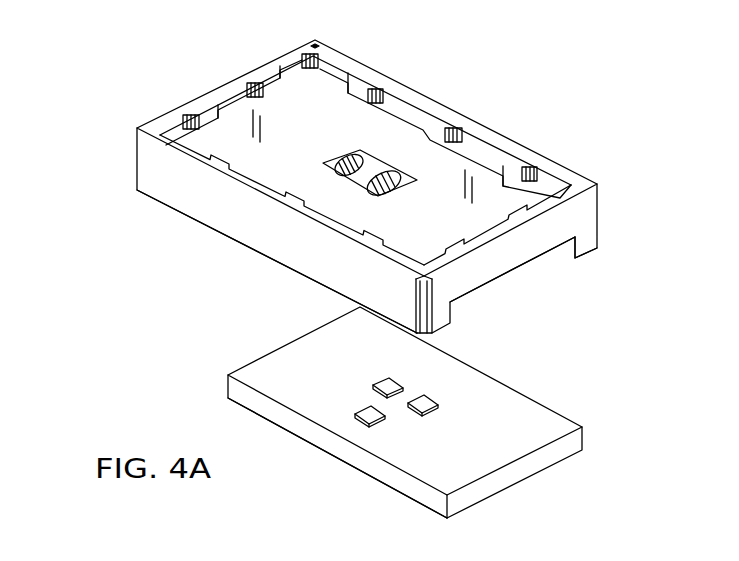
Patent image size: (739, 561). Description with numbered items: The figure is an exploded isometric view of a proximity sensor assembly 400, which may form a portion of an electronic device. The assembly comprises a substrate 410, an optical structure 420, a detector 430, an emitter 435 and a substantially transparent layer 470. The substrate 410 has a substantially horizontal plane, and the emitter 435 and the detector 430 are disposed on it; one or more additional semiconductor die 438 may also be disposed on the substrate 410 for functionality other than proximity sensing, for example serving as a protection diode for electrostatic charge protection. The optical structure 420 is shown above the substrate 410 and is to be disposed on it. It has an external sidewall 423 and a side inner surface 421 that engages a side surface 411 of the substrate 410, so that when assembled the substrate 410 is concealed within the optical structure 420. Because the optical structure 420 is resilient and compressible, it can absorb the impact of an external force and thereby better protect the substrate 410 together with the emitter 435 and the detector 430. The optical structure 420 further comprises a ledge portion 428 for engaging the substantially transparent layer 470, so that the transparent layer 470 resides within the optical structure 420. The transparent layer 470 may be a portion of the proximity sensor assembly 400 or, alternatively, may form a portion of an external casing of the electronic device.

The proximity sensor assembly 400 is at (118, 40).
The optical structure 420 is at (145, 107).
The side inner surface 421 is at (570, 255).
The external sidewall 423 is at (289, 243).
The ledge portion 428 is at (440, 126).
The substantially transparent layer 470 is at (290, 110).
The substrate 410 is at (268, 372).
The side surface 411 is at (312, 425).
The detector 430 is at (385, 382).
The emitter 435 is at (436, 402).
The additional semiconductor die 438 is at (372, 418).